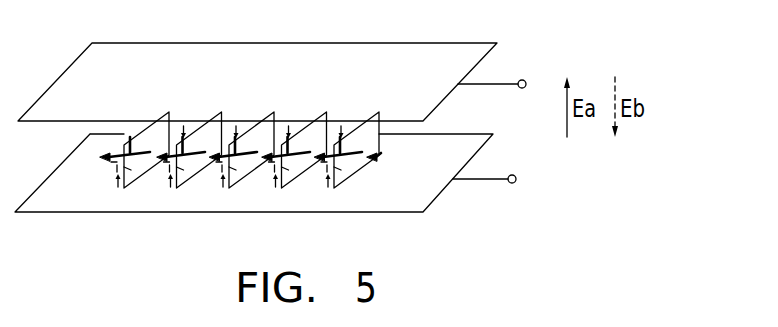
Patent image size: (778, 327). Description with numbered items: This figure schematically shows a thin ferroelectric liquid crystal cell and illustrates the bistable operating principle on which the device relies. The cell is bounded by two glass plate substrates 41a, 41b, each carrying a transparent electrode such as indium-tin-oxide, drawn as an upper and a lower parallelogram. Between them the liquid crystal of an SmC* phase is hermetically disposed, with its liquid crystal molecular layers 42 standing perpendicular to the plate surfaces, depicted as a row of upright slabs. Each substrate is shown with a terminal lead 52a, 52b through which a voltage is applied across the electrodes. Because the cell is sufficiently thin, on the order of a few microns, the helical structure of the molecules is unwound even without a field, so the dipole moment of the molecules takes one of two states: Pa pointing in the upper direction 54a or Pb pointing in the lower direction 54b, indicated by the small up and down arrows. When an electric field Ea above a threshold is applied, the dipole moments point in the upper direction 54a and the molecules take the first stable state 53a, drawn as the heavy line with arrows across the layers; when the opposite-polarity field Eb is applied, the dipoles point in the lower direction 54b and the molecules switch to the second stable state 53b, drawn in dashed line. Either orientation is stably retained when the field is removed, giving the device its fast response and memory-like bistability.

The substrate 41a is at (440, 43).
The substrate 41b is at (440, 195).
The liquid crystal molecular layers 42 is at (379, 108).
The upper terminal 52a is at (524, 79).
The lower terminal 52b is at (517, 179).
The first stable state 53a is at (148, 153).
The second stable state 53b is at (128, 170).
The upper direction 54a is at (131, 134).
The lower direction 54b is at (117, 180).